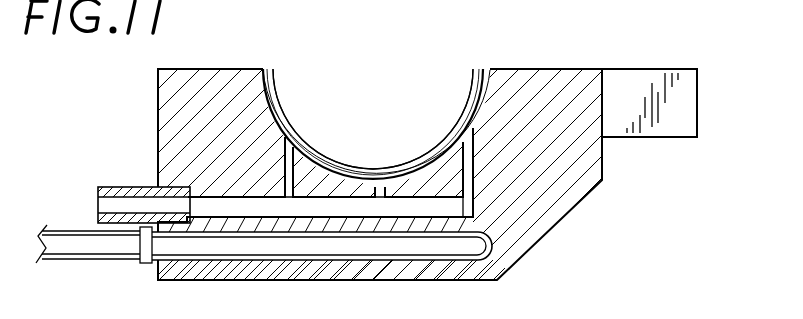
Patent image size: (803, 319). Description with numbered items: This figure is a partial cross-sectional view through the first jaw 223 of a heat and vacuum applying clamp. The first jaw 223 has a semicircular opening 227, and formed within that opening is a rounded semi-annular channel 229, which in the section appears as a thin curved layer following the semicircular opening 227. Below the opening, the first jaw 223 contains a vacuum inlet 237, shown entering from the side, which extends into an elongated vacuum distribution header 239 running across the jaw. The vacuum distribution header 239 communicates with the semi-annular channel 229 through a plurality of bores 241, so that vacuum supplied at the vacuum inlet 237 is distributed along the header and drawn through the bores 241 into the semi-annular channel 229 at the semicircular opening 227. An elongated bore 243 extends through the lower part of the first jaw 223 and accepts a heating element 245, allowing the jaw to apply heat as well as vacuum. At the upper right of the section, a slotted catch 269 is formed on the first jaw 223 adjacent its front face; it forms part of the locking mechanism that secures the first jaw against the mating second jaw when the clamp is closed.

The first jaw 223 is at (602, 168).
The semicircular opening 227 is at (279, 92).
The semi-annular channel 229 is at (289, 124).
The vacuum inlet 237 is at (145, 188).
The vacuum distribution header 239 is at (458, 212).
The bores 241 is at (312, 164).
The elongated bore 243 is at (453, 262).
The heating element 245 is at (478, 246).
The slotted catch 269 is at (687, 69).